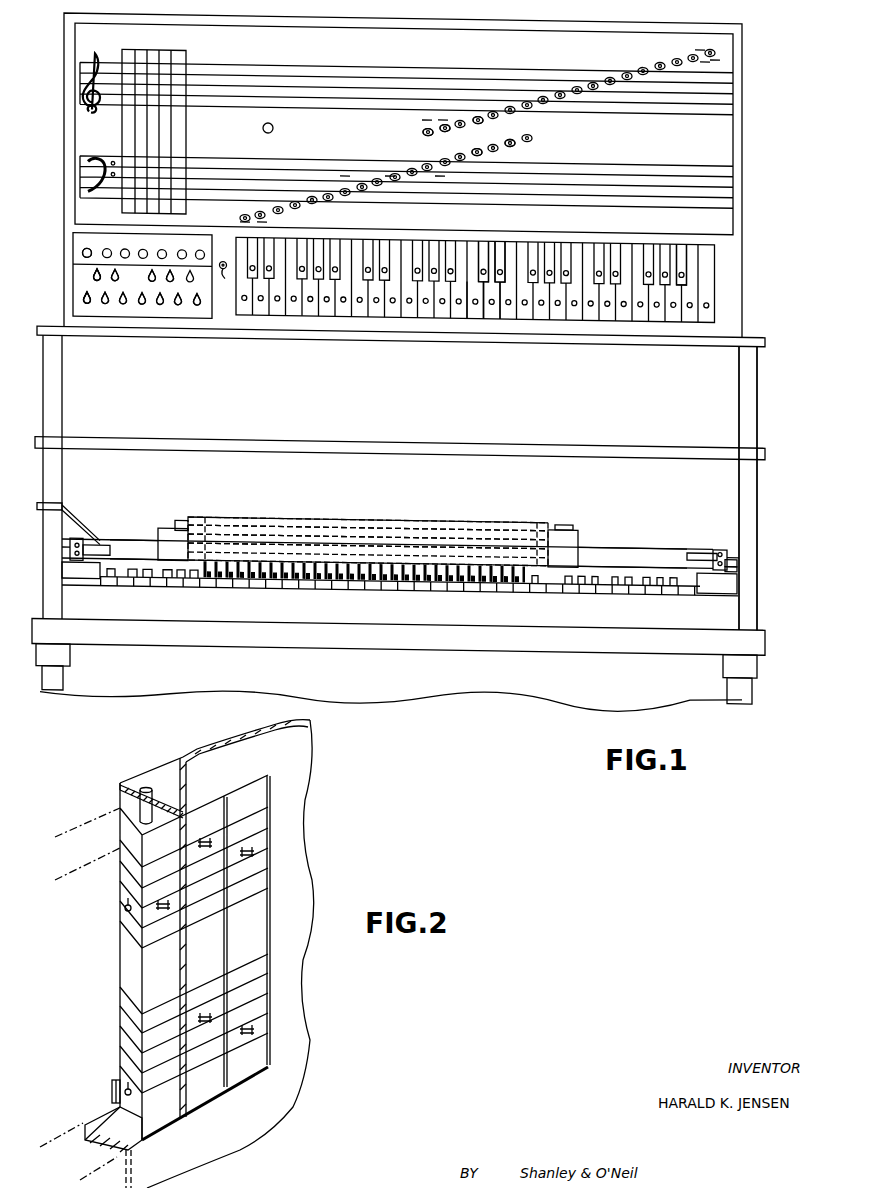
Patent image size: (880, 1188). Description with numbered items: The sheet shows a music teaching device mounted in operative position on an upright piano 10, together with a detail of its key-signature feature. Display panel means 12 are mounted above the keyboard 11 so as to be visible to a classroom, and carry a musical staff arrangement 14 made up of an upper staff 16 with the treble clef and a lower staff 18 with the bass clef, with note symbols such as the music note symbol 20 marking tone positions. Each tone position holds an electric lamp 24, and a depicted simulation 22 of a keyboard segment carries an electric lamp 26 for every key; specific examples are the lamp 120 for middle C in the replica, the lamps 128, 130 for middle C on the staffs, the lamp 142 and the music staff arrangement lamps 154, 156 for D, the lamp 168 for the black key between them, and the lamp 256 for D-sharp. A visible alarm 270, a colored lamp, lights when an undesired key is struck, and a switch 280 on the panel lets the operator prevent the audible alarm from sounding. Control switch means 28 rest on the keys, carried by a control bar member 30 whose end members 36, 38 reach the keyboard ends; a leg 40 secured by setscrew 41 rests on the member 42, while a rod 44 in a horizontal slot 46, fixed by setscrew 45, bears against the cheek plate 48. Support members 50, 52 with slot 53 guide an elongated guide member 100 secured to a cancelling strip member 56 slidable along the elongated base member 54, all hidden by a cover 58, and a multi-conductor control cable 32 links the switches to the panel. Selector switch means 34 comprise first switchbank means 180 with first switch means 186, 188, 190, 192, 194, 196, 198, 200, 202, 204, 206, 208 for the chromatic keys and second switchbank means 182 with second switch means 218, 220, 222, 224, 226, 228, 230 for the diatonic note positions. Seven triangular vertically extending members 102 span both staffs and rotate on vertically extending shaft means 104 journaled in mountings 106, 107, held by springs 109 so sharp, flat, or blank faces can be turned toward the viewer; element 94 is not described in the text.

In FIG. 1, the upright piano 10 is at (758, 489).
In FIG. 1, the keyboard 11 is at (305, 588).
In FIG. 1, the display panel means 12 is at (744, 116).
In FIG. 1, the musical staff arrangement 14 is at (66, 118).
In FIG. 1, the upper staff 16 is at (237, 57).
In FIG. 1, the lower staff 18 is at (237, 156).
In FIG. 1, the music note symbol 20 is at (428, 128).
In FIG. 1, the depicted simulation of a segment of the keyboard 22 is at (716, 281).
In FIG. 1, the electric lamp 24 is at (426, 125).
In FIG. 1, the electric lamp 26 is at (685, 262).
In FIG. 1, the control switch means 28 is at (390, 514).
In FIG. 1, the control bar member 30 is at (617, 538).
In FIG. 1, the multi-conductor control cable 32 is at (60, 505).
In FIG. 1, the selector switch means 34 is at (71, 265).
In FIG. 1, the end member 36 is at (665, 538).
In FIG. 1, the end member 38 is at (135, 538).
In FIG. 1, the leg 40 is at (738, 559).
In FIG. 1, the setscrew 41 is at (737, 552).
In FIG. 1, the member 42 is at (705, 582).
In FIG. 1, the rod 44 is at (739, 546).
In FIG. 1, the setscrew 45 is at (720, 538).
In FIG. 1, the horizontal slot 46 is at (695, 542).
In FIG. 1, the cheek plate 48 is at (758, 521).
In FIG. 1, the support member 50 is at (578, 538).
In FIG. 1, the support member 52 is at (165, 526).
In FIG. 1, the slot 53 is at (182, 518).
In FIG. 1, the elongated base member 54 is at (445, 540).
In FIG. 1, the cancelling strip member 56 is at (330, 522).
In FIG. 1, the cover 58 is at (285, 514).
In FIG. 1, the stop 94 is at (562, 516).
In FIG. 1, the elongated guide member 100 is at (365, 531).
In FIG. 1, the vertically extending member 102 is at (122, 48).
In FIG. 2, the vertically extending member 102 is at (120, 958).
In FIG. 2, the vertically extending shaft means 104 is at (140, 806).
In FIG. 2, the mounting 106 is at (165, 760).
In FIG. 2, the mounting 107 is at (92, 1120).
In FIG. 2, the spring 109 is at (112, 1085).
In FIG. 1, the lamp 120 is at (475, 298).
In FIG. 1, the lamp 128 is at (483, 114).
In FIG. 1, the lamp 130 is at (476, 142).
In FIG. 1, the lamp 142 is at (491, 298).
In FIG. 1, the music staff arrangement lamp 154 is at (493, 104).
In FIG. 1, the music staff arrangement lamp 156 is at (512, 141).
In FIG. 1, the lamp 168 is at (485, 264).
In FIG. 1, the first switchbank means 180 is at (80, 296).
In FIG. 1, the second switchbank means 182 is at (82, 251).
In FIG. 1, the first switch means 186 is at (82, 301).
In FIG. 1, the first switch means 188 is at (97, 278).
In FIG. 1, the first switch means 190 is at (87, 301).
In FIG. 1, the first switch means 192 is at (105, 301).
In FIG. 1, the first switch means 194 is at (115, 278).
In FIG. 1, the first switch means 196 is at (123, 301).
In FIG. 1, the first switch means 198 is at (152, 278).
In FIG. 1, the first switch means 200 is at (142, 301).
In FIG. 1, the first switch means 202 is at (160, 301).
In FIG. 1, the first switch means 204 is at (170, 278).
In FIG. 1, the first switch means 206 is at (178, 301).
In FIG. 1, the first switch means 208 is at (197, 301).
In FIG. 1, the second switch means 218 is at (85, 248).
In FIG. 1, the second switch means 220 is at (105, 248).
In FIG. 1, the second switch means 222 is at (123, 248).
In FIG. 1, the second switch means 224 is at (141, 248).
In FIG. 1, the second switch means 226 is at (164, 248).
In FIG. 1, the second switch means 228 is at (184, 248).
In FIG. 1, the second switch means 230 is at (204, 250).
In FIG. 1, the lamp 256 is at (502, 264).
In FIG. 1, the visible alarm 270 is at (273, 123).
In FIG. 1, the switch 280 is at (163, 287).